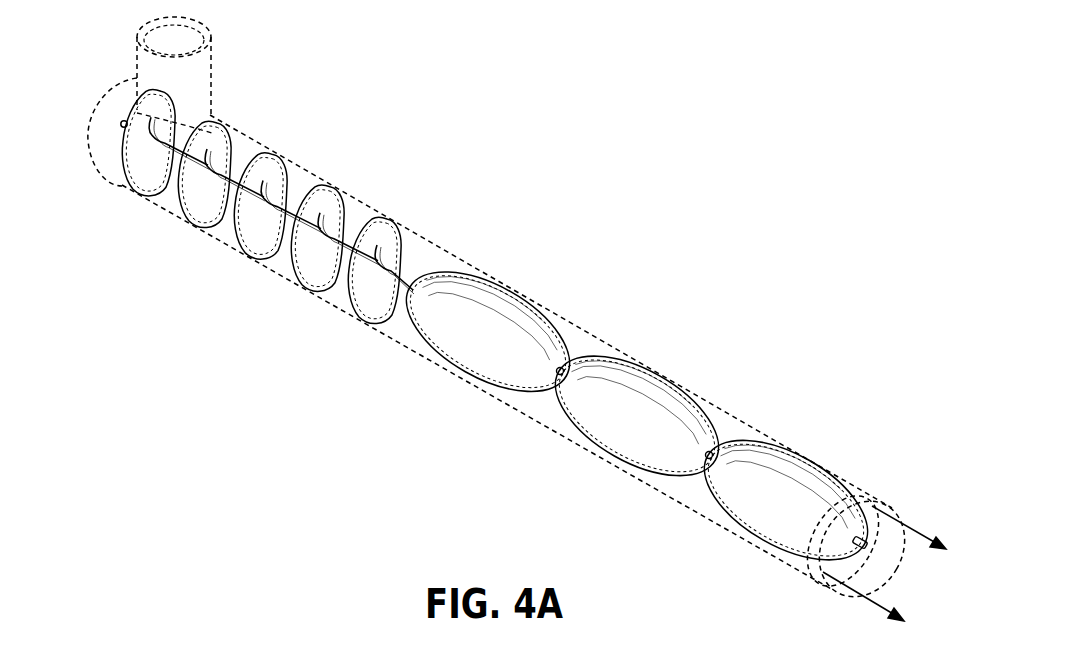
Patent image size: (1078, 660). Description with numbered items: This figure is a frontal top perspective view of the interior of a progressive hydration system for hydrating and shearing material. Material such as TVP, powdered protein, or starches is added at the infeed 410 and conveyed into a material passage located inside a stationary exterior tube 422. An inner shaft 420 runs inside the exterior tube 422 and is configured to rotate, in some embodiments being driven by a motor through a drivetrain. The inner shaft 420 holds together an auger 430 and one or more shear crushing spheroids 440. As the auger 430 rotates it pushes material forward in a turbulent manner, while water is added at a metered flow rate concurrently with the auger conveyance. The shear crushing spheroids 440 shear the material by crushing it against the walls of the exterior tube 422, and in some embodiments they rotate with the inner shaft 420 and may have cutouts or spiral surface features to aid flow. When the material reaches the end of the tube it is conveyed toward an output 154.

The infeed 410 is at (188, 68).
The inner shaft 420 is at (122, 130).
The exterior tube 422 is at (588, 335).
The auger 430 is at (272, 153).
The shear crushing spheroids 440 is at (663, 447).
The output 154 is at (913, 528).